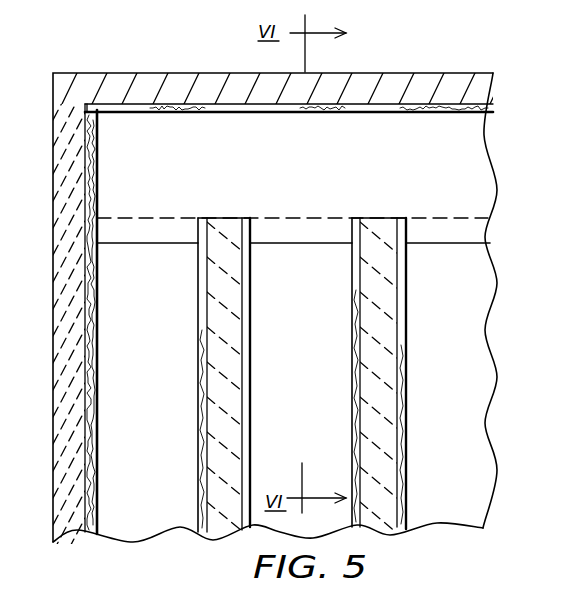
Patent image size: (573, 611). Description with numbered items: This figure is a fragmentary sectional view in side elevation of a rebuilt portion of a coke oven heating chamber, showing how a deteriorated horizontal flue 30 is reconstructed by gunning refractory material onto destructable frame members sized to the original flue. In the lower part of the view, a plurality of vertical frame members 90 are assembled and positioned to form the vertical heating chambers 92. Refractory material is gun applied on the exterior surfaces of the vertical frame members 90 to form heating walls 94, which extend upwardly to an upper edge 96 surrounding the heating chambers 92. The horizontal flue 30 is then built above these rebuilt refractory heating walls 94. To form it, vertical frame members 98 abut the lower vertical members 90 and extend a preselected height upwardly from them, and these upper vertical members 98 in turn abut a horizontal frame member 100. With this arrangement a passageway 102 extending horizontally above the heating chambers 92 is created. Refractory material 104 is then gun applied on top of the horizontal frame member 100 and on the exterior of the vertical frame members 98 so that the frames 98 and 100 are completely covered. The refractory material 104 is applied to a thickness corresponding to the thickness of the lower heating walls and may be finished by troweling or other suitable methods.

The horizontal flue 30 is at (394, 72).
The vertical frame members 90 is at (200, 420).
The heating chambers 92 is at (150, 292).
The heating walls 94 is at (235, 263).
The upper edge 96 is at (222, 218).
The vertical frame members 98 is at (98, 150).
The horizontal frame member 100 is at (137, 107).
The passageway 102 is at (462, 137).
The refractory material 104 is at (222, 80).